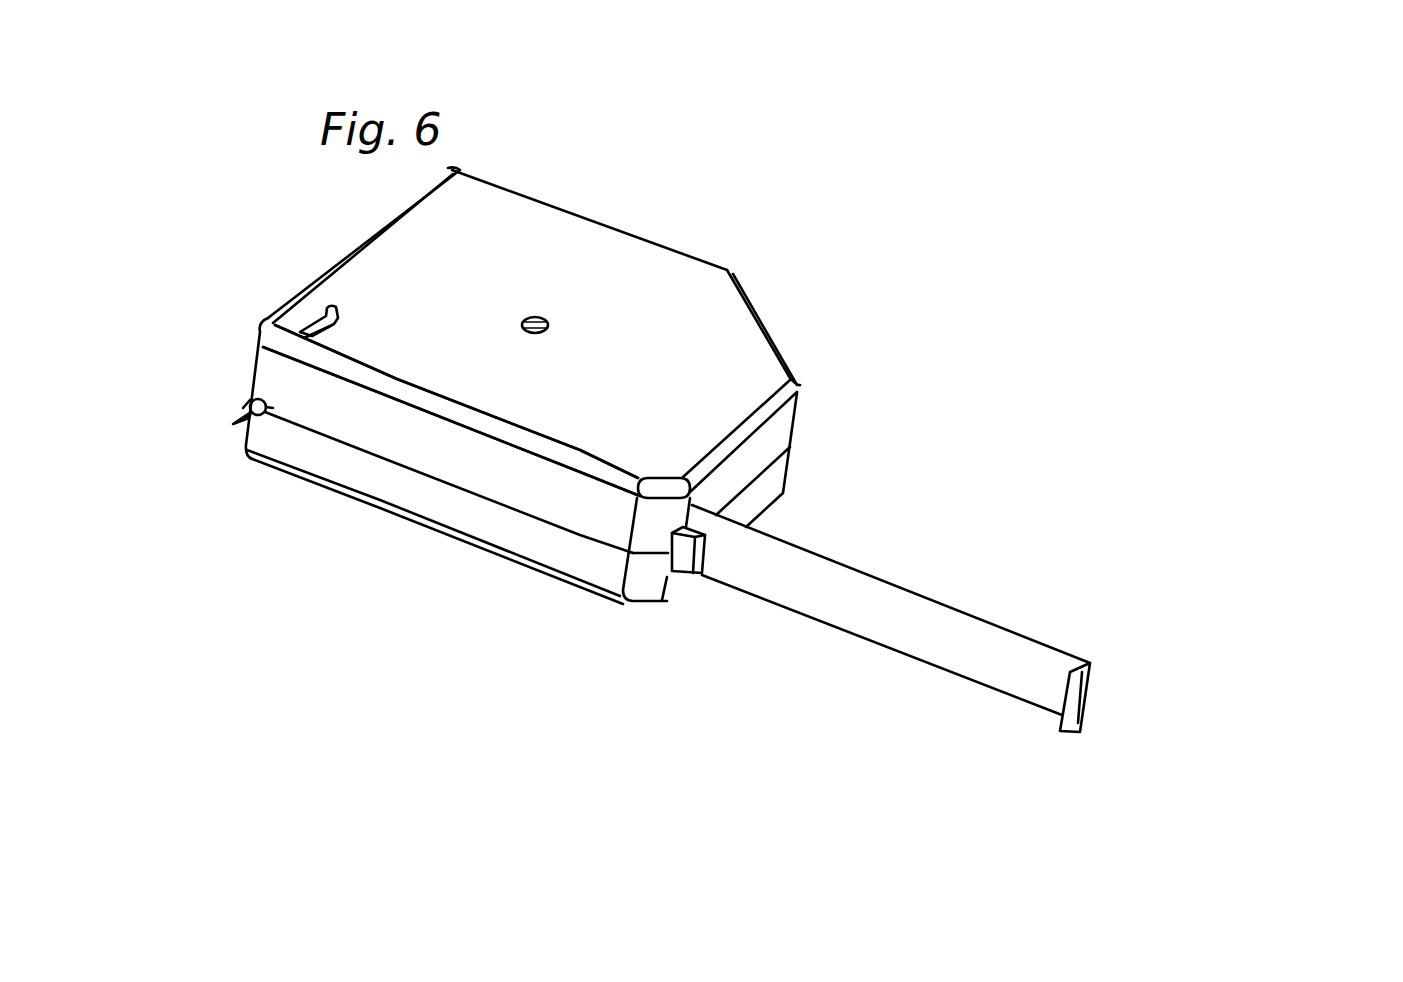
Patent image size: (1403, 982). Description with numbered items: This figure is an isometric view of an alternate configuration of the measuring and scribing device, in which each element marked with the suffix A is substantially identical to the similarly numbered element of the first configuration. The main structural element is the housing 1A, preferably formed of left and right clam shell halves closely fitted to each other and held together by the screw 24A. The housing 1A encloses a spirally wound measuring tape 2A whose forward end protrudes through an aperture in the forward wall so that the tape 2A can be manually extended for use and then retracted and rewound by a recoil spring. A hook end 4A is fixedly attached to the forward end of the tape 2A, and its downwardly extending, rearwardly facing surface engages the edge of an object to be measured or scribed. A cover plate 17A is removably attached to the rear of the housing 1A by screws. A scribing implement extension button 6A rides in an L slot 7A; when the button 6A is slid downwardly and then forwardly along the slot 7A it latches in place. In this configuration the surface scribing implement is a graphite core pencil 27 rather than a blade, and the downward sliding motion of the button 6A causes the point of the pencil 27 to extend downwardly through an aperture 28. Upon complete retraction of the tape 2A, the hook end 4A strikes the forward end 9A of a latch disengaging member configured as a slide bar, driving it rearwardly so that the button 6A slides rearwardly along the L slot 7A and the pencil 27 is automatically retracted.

The housing 1A is at (547, 251).
The measuring tape 2A is at (875, 613).
The hook end 4A is at (1083, 695).
The scribing implement extension button 6A is at (332, 330).
The L slot 7A is at (294, 328).
The forward end of latch disengaging member 9A is at (683, 557).
The cover plate 17A is at (385, 223).
The screw 24A is at (546, 318).
The graphite core pencil 27 is at (257, 420).
The aperture 28 is at (273, 408).